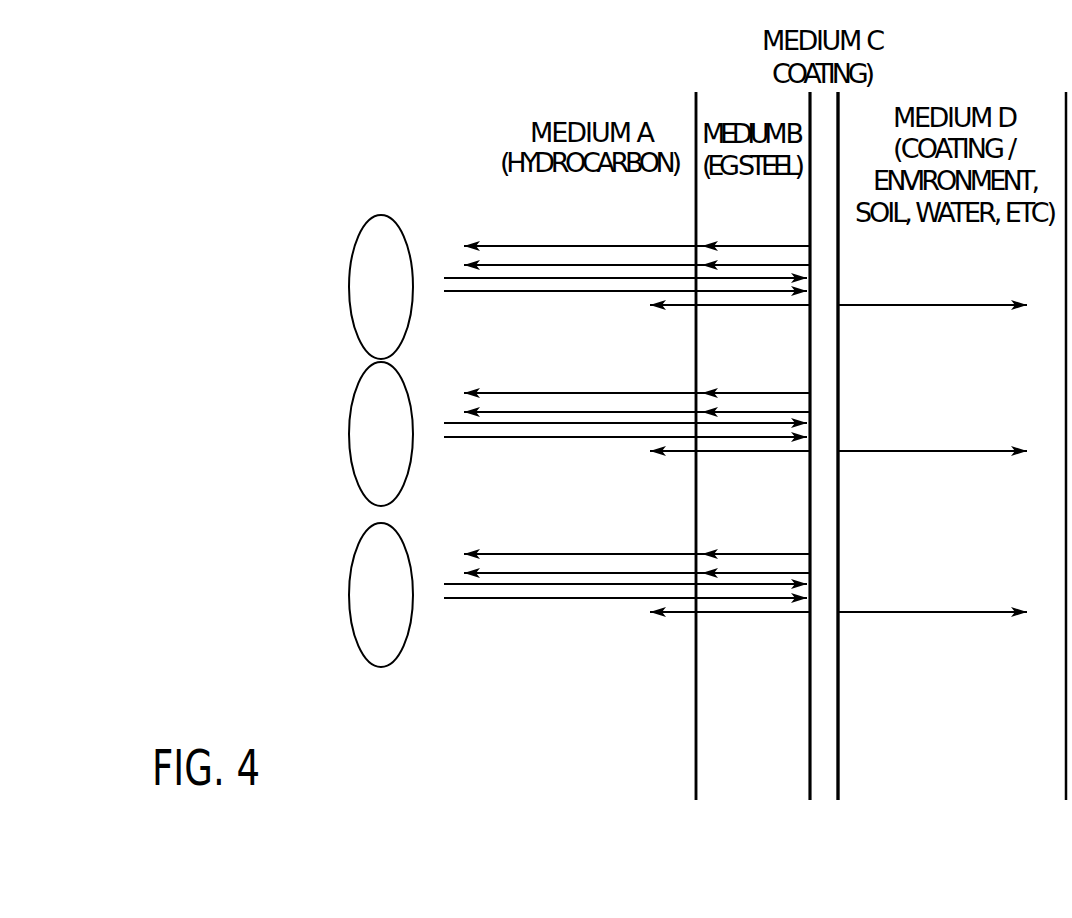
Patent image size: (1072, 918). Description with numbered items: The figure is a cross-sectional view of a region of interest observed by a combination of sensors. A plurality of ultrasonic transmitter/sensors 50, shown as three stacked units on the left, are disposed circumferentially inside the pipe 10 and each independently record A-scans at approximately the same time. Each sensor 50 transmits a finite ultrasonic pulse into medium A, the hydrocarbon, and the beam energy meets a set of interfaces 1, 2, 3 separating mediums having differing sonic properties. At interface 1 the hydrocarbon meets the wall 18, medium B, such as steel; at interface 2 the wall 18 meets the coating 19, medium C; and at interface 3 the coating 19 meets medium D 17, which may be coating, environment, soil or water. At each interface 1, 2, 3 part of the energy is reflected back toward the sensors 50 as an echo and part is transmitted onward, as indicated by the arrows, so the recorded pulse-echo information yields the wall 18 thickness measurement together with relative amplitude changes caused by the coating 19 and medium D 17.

The ultrasonic transmitter/sensor 50 is at (350, 291).
The interface 1 is at (682, 446).
The interface 2 is at (797, 446).
The interface 3 is at (853, 446).
The wall 18 is at (766, 746).
The medium D 17 is at (930, 741).
The coating 19 is at (825, 775).
The pipe 10 is at (838, 775).